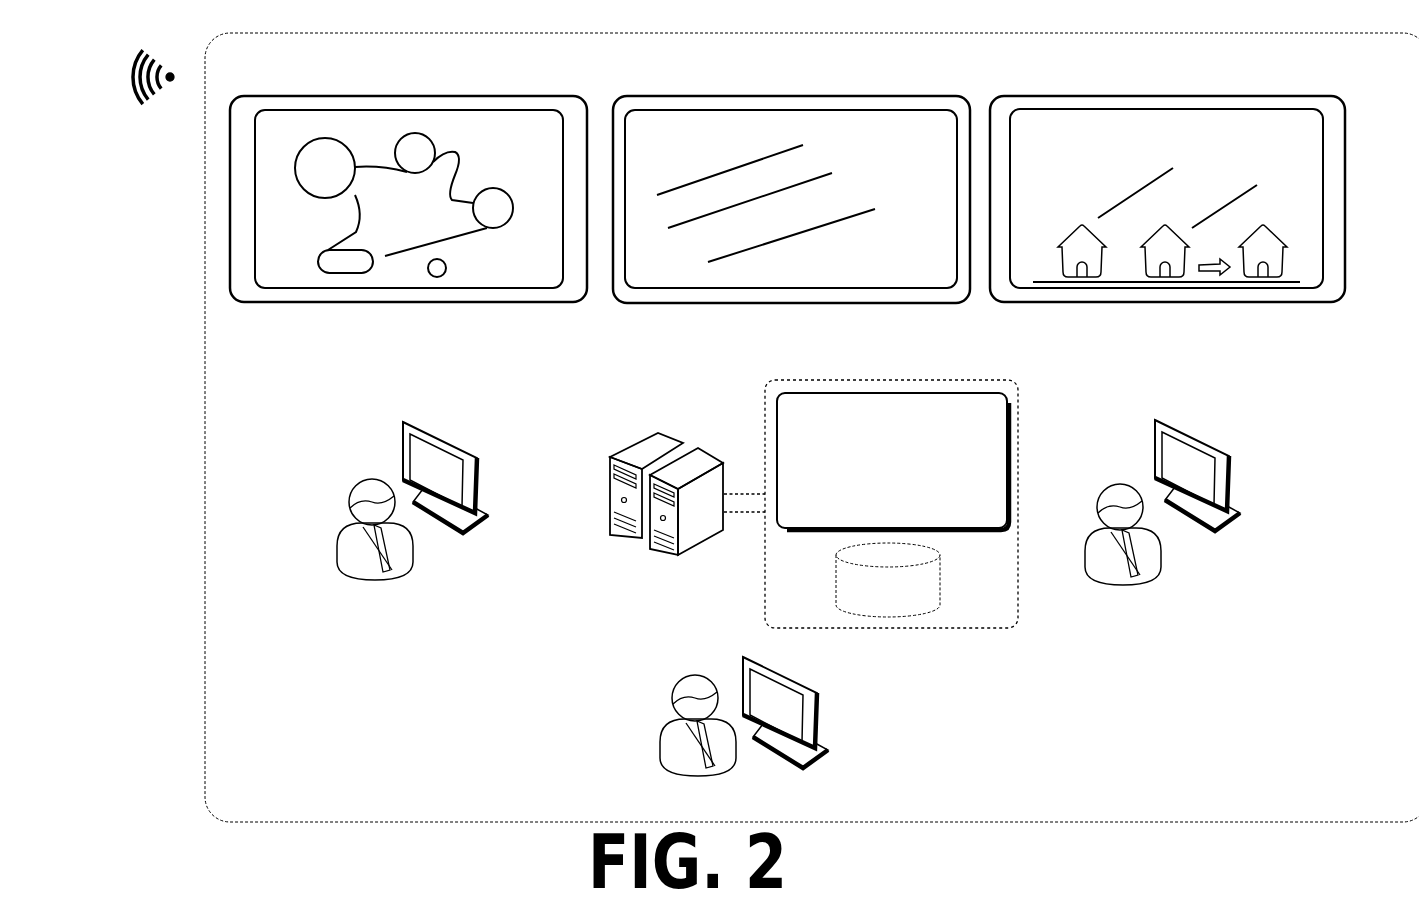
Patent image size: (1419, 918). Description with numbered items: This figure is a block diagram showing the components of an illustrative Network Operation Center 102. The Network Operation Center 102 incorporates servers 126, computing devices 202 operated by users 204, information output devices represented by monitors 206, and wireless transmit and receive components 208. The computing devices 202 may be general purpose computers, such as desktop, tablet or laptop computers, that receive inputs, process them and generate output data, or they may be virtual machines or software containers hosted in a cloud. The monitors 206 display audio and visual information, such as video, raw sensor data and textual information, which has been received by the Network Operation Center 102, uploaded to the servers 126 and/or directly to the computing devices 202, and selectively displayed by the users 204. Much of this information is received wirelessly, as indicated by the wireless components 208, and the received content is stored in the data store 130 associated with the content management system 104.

The Network Operation Center 102 is at (1070, 81).
The content management system 104 is at (872, 518).
The servers 126 is at (643, 435).
The data store 130 is at (872, 603).
The computing devices 202 is at (487, 520).
The users 204 is at (345, 578).
The monitors 206 is at (350, 308).
The wireless transmit and receive components 208 is at (147, 105).